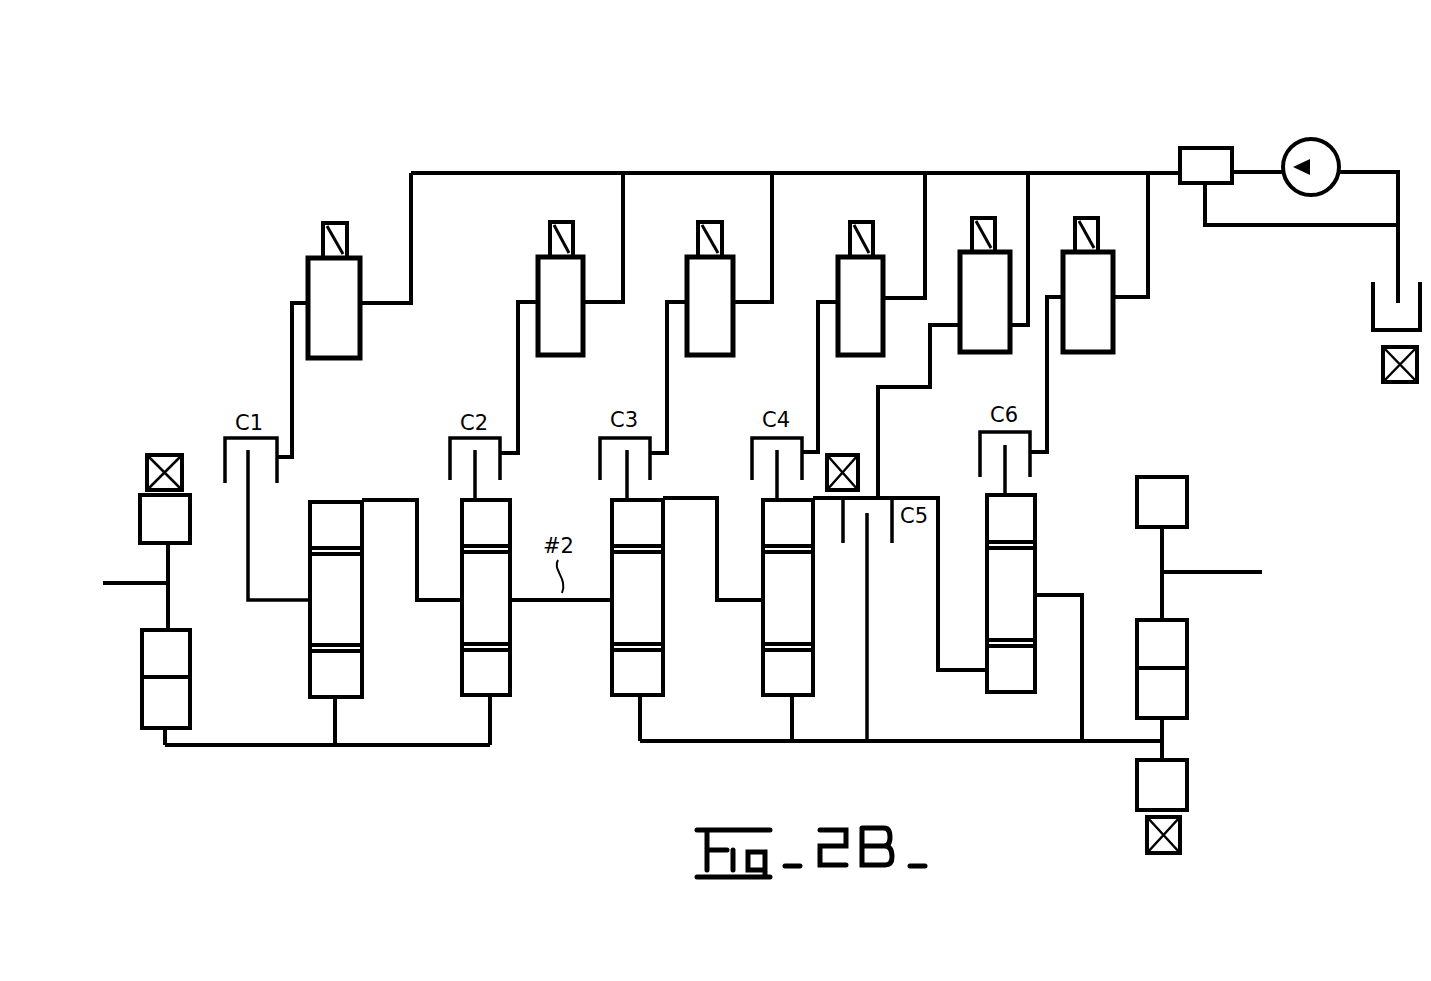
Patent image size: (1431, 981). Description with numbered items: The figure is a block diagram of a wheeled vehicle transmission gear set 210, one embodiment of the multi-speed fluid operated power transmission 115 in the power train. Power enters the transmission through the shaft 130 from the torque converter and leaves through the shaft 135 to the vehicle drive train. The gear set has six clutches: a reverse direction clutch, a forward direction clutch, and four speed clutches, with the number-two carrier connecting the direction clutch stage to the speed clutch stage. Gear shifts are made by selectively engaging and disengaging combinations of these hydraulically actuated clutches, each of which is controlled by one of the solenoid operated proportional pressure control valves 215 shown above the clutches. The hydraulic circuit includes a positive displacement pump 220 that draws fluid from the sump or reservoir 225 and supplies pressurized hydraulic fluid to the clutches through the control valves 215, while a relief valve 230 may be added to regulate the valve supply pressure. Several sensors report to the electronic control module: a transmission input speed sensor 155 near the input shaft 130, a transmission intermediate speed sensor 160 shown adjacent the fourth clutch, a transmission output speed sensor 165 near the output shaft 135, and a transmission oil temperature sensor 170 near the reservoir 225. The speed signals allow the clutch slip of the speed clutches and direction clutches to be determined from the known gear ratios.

The multi-speed fluid operated power transmission 115 is at (292, 157).
The wheeled vehicle transmission gear set 210 is at (205, 225).
The solenoid operated proportional pressure control valves 215 is at (310, 280).
The positive displacement pump 220 is at (1340, 165).
The sump or reservoir 225 is at (1372, 300).
The relief valve 230 is at (1198, 147).
The transmission oil temperature sensor 170 is at (1383, 358).
The transmission input speed sensor 155 is at (148, 478).
The shaft 130 is at (140, 582).
The transmission intermediate speed sensor 160 is at (845, 452).
The shaft 135 is at (1217, 570).
The transmission output speed sensor 165 is at (1180, 837).